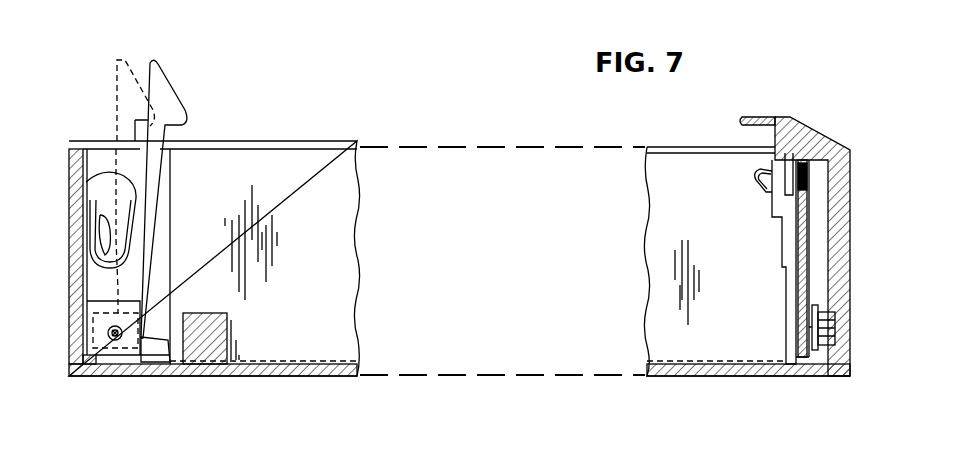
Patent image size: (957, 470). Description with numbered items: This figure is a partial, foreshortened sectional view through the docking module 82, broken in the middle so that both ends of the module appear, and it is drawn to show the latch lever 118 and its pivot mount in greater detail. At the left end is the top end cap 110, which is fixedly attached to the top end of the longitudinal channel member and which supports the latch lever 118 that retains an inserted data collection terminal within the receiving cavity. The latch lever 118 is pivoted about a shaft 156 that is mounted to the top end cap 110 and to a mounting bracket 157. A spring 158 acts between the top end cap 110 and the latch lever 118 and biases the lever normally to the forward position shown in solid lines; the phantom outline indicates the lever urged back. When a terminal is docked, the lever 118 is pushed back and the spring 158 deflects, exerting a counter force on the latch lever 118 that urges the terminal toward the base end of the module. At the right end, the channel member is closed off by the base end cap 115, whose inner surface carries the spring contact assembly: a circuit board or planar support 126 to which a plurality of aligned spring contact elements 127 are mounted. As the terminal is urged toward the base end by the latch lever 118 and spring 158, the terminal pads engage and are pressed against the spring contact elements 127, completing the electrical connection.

The docking module 82 is at (443, 116).
The top end cap 110 is at (76, 163).
The base end cap 115 is at (853, 160).
The latch lever 118 is at (167, 75).
The circuit board or planar support 126 is at (793, 332).
The spring contact elements 127 is at (755, 177).
The shaft 156 is at (122, 333).
The mounting bracket 157 is at (97, 305).
The spring 158 is at (79, 193).